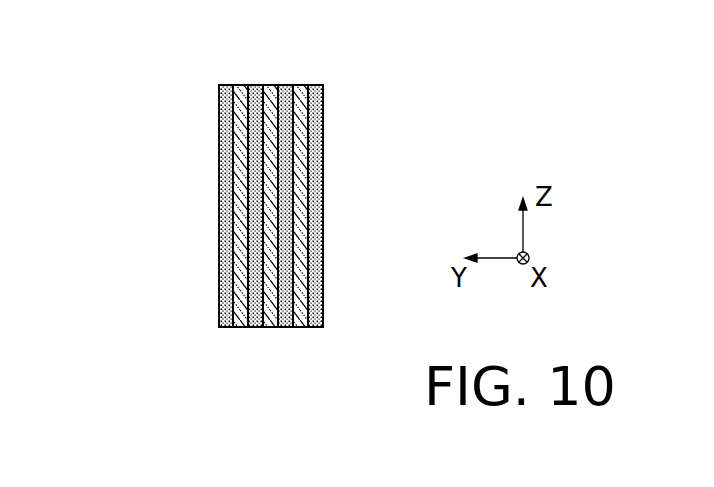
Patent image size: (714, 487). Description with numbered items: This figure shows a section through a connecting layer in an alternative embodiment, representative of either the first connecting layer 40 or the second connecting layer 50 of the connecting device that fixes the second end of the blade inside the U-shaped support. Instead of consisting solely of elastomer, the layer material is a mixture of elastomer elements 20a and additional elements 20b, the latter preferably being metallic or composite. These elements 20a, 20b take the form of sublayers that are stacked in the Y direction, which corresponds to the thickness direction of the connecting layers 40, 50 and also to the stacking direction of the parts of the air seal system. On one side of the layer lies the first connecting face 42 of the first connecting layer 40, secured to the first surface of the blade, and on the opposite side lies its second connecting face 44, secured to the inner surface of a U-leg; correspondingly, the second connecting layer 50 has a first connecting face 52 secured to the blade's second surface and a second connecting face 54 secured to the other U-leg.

The first connecting layer 40 is at (279, 169).
The second connecting layer 50 is at (273, 206).
The second connecting face 44 is at (219, 172).
The first connecting face 52 is at (226, 206).
The first connecting face 42 is at (323, 162).
The second connecting face 54 is at (240, 206).
The additional elements 20b is at (300, 85).
The elastomer elements 20a is at (315, 328).